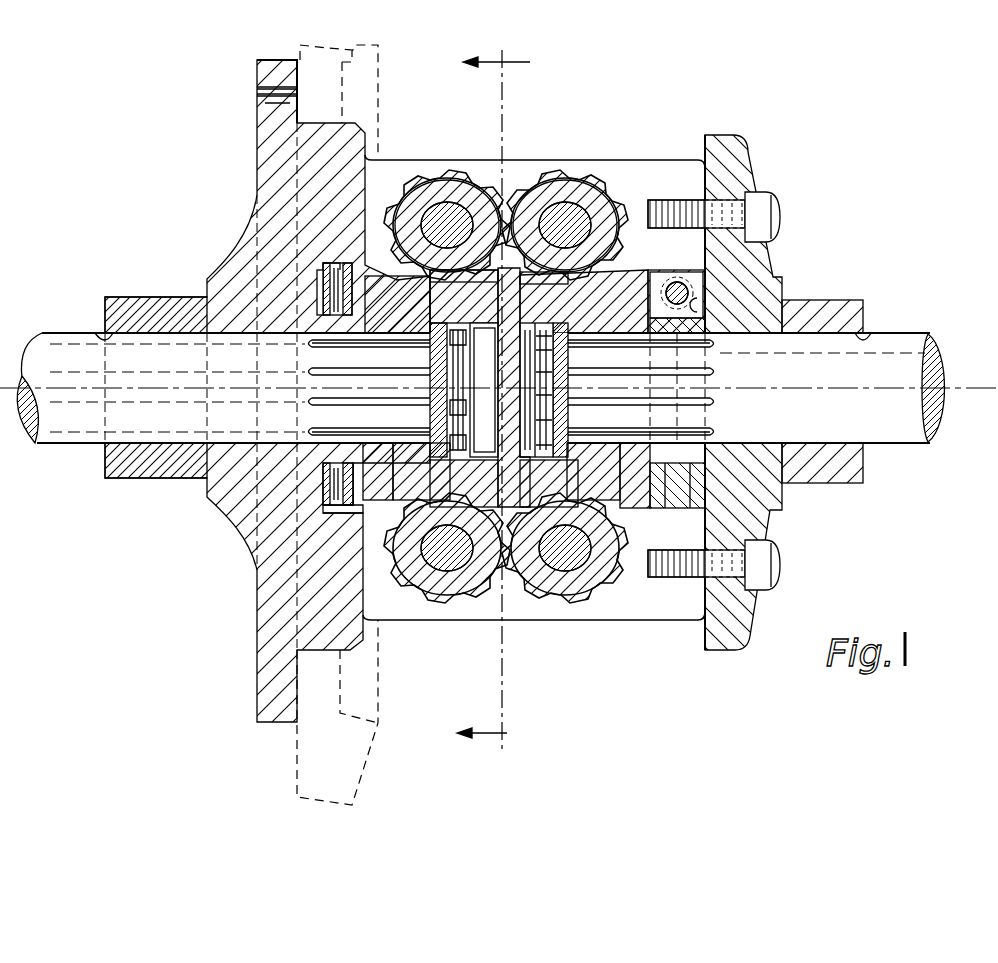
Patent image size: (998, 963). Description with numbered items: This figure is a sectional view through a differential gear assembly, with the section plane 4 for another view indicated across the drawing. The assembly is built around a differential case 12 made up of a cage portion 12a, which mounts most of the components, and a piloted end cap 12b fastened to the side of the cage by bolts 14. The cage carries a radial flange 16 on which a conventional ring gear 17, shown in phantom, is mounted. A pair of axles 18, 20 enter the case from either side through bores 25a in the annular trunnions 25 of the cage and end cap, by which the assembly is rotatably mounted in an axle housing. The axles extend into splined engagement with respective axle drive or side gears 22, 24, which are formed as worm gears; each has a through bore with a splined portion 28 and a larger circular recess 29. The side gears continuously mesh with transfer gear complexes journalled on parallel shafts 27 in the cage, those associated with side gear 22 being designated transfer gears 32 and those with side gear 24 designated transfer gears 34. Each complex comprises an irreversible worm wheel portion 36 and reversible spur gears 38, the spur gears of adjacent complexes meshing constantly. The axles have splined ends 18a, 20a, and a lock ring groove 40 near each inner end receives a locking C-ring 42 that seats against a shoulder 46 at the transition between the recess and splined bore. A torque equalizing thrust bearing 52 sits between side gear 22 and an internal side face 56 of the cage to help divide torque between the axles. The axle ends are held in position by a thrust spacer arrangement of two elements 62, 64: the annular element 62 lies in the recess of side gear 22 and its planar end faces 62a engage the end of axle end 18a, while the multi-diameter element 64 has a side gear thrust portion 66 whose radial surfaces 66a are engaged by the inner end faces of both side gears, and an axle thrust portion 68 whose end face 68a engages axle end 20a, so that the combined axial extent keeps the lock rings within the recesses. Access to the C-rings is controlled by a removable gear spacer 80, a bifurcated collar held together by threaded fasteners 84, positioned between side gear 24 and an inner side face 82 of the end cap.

The section line 4- 4 is at (505, 400).
The differential case 12 is at (663, 128).
The cage portion 12a is at (250, 182).
The piloted end cap 12b is at (765, 150).
The bolts 14 is at (780, 568).
The radial flange 16 is at (258, 68).
The ring gear 17 is at (385, 88).
The axle 18 is at (68, 372).
The splined end 18a is at (370, 387).
The axle 20 is at (904, 391).
The splined end 20a is at (620, 416).
The axle drive gear 22 is at (421, 317).
The axle drive gear 24 is at (640, 316).
The annular trunnions 25 is at (832, 300).
The bores 25a is at (871, 335).
The parallel shafts 27 is at (506, 386).
The splined portion 28 is at (655, 470).
The circular recess 29 is at (504, 483).
The transfer gears 32 is at (395, 595).
The transfer gears 34 is at (630, 590).
The worm wheel portion 36 is at (585, 178).
The spur gears 38 is at (612, 178).
The lock ring groove 40 is at (560, 364).
The locking C-ring 42 is at (580, 442).
The shoulder 46 is at (506, 471).
The torque equalizing thrust bearing 52 is at (331, 252).
The internal side face 56 is at (318, 291).
The thrust element 62 is at (492, 380).
The end faces 62a is at (511, 390).
The second thrust element 64 is at (514, 387).
The side gear thrust portion 66 is at (500, 296).
The radial surfaces 66a is at (585, 288).
The axle thrust portion 68 is at (584, 301).
The end face 68a is at (537, 398).
The removable gear spacer 80 is at (660, 272).
The inner side face 82 is at (708, 305).
The threaded fasteners 84 is at (690, 290).